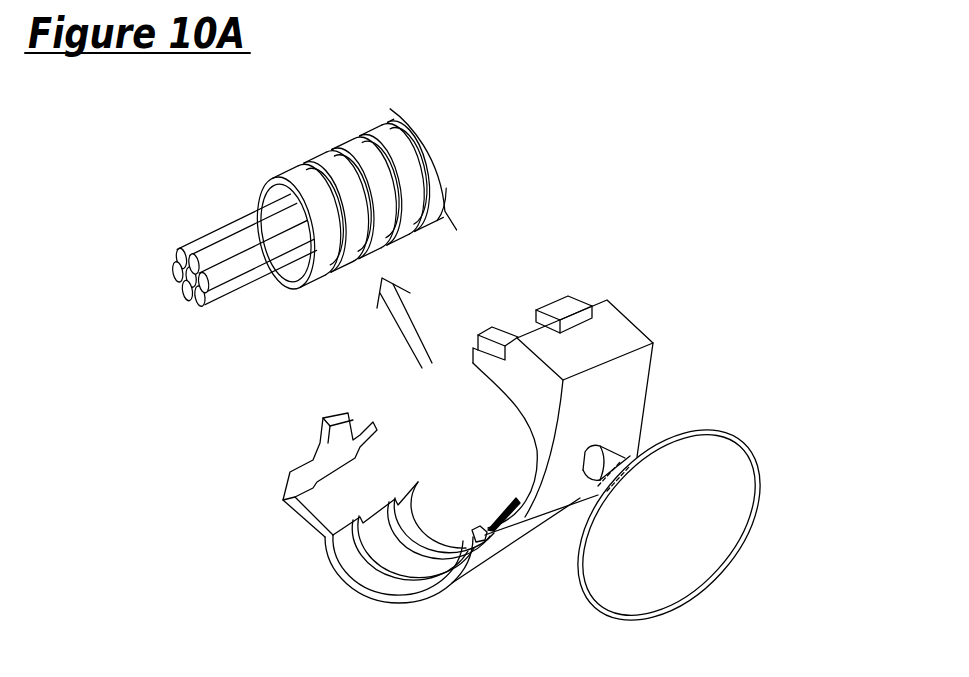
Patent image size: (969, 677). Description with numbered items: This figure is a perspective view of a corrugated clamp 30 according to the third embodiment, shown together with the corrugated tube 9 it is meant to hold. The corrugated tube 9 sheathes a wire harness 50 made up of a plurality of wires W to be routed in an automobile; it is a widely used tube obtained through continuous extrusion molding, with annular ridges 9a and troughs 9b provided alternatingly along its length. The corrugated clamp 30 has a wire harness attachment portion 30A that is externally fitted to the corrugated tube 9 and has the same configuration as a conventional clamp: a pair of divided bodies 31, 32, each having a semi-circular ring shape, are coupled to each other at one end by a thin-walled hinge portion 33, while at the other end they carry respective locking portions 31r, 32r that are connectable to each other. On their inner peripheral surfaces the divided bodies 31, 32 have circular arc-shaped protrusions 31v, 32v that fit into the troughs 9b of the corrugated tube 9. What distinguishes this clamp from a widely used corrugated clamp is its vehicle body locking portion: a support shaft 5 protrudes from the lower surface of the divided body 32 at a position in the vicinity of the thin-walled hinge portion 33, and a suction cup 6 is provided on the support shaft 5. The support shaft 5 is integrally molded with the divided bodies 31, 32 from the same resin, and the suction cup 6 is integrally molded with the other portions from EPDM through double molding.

The corrugated tube 9 is at (368, 121).
The annular ridges 9a is at (300, 168).
The troughs 9b is at (317, 155).
The wire harness 50 is at (225, 217).
The wires W is at (202, 238).
The corrugated clamp 30 is at (622, 300).
The wire harness attachment portion 30A is at (322, 582).
The divided body 31 is at (373, 598).
The locking portion 31r is at (333, 425).
The circular arc-shaped protrusions 31v is at (402, 520).
The divided body 32 is at (642, 402).
The locking portion 32r is at (547, 310).
The circular arc-shaped protrusion 32v is at (512, 500).
The thin-walled hinge portion 33 is at (477, 530).
The support shaft 5 is at (601, 447).
The suction cup 6 is at (760, 478).